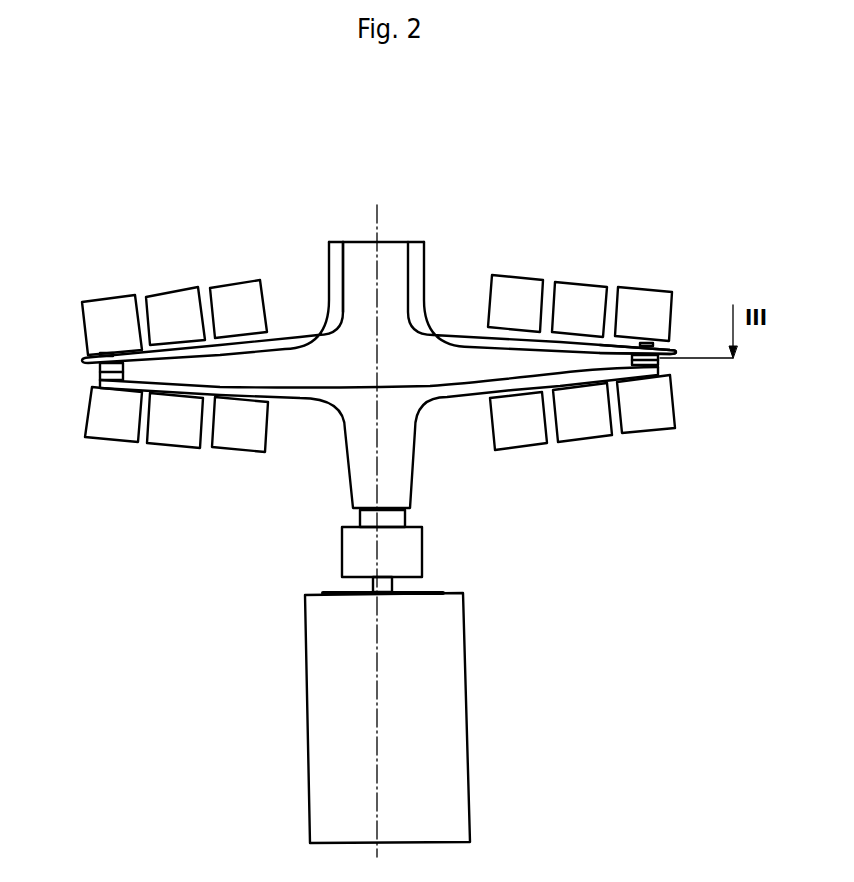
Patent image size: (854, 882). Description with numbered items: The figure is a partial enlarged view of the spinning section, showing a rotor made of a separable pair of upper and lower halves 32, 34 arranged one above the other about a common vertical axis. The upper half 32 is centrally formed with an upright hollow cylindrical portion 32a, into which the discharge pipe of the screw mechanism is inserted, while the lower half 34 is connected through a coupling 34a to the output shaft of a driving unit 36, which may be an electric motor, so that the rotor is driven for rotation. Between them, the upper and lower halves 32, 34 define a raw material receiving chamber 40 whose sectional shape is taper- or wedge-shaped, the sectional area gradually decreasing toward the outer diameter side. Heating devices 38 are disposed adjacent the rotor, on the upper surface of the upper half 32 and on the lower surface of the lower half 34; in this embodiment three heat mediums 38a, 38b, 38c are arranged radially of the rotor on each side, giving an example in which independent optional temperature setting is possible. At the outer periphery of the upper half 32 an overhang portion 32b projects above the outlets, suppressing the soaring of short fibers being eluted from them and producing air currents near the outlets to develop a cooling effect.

The upper half 32 is at (300, 337).
The upright hollow cylindrical portion 32a is at (333, 255).
The overhang portion 32b is at (684, 351).
The lower half 34 is at (316, 397).
The coupling 34a is at (417, 547).
The driving unit 36 is at (453, 702).
The heating devices 38 is at (258, 265).
The heat medium 38a is at (513, 292).
The heat medium 38b is at (577, 292).
The heat medium 38c is at (640, 297).
The raw material receiving chamber 40 is at (417, 368).